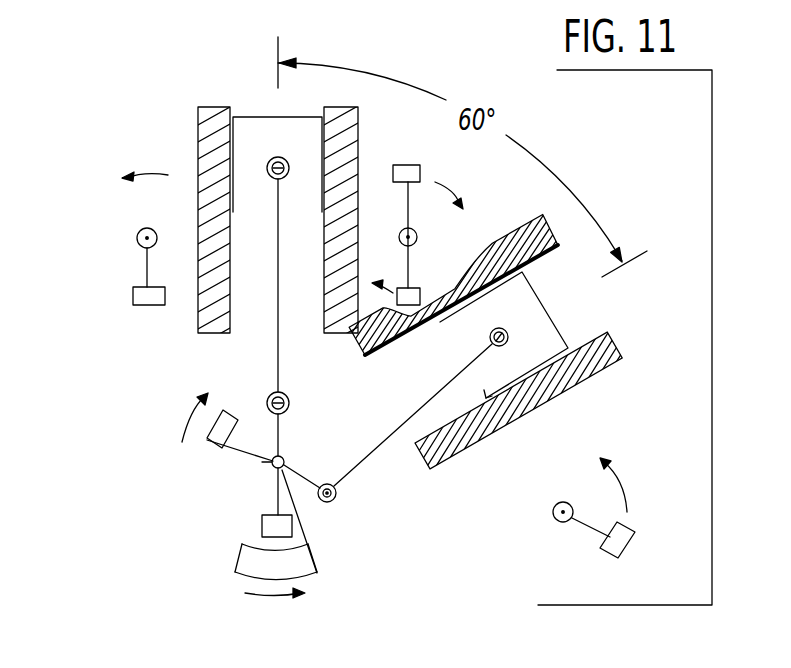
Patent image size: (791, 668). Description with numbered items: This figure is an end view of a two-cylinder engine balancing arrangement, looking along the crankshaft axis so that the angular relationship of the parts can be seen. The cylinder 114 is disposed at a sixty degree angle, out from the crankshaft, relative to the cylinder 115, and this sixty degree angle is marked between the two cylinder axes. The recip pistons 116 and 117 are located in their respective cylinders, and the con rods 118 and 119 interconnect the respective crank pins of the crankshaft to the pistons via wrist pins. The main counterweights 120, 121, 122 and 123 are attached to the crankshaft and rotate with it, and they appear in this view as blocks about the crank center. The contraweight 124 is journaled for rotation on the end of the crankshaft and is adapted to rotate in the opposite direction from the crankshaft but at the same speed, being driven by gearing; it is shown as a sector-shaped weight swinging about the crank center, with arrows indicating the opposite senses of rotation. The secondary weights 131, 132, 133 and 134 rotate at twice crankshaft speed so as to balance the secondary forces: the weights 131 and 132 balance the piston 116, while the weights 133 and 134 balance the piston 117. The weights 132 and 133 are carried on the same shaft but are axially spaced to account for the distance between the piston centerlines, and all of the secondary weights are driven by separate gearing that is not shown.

The cylinder 114 is at (593, 340).
The cylinder 115 is at (230, 307).
The recip piston 116 is at (252, 116).
The recip piston 117 is at (541, 301).
The con rod 118 is at (278, 333).
The con rod 119 is at (382, 449).
The main counterweight 120 is at (235, 516).
The main counterweight 121 is at (228, 500).
The main counterweight 122 is at (188, 446).
The main counterweight 123 is at (155, 427).
The contraweight 124 is at (247, 560).
The secondary weight 131 is at (140, 295).
The secondary weight 132 is at (421, 298).
The secondary weight 133 is at (407, 164).
The secondary weight 134 is at (628, 548).